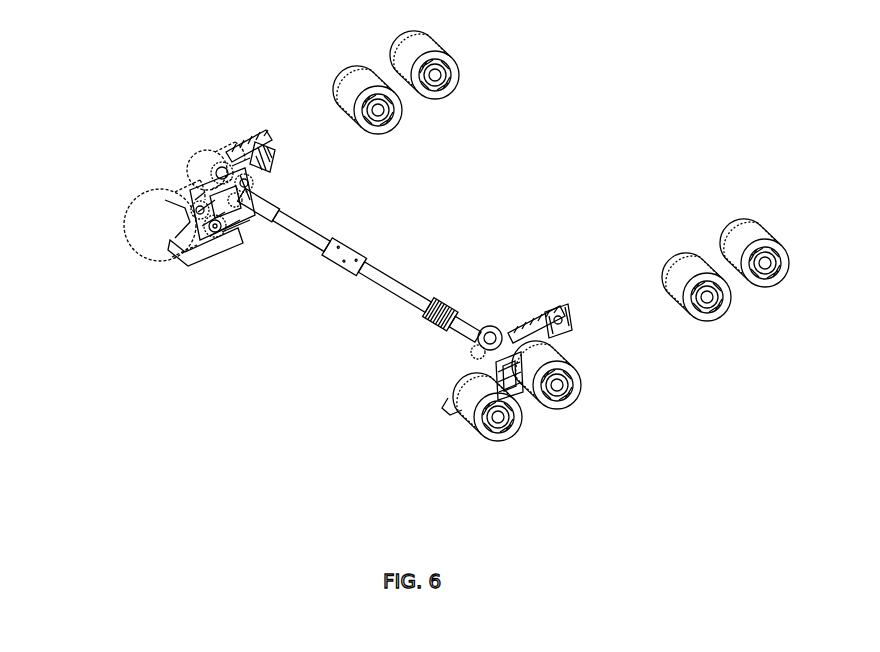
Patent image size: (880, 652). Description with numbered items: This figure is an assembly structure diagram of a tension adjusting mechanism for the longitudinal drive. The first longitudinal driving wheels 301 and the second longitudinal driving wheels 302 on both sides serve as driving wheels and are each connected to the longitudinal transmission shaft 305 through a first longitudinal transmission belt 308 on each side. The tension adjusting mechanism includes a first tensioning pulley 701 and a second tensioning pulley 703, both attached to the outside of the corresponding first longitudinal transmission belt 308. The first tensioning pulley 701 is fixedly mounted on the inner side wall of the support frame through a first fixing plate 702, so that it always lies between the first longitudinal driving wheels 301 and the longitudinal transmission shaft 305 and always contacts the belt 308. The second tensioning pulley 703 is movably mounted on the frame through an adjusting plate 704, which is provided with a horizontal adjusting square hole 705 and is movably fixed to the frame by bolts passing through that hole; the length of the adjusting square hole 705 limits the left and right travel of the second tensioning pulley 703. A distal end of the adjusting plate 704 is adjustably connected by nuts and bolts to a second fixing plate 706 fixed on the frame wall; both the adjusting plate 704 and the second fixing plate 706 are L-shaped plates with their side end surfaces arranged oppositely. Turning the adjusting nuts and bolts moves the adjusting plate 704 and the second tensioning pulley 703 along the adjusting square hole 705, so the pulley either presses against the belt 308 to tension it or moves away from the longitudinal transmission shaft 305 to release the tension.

The first longitudinal driving wheel 301 is at (151, 232).
The second longitudinal driving wheel 302 is at (215, 160).
The longitudinal transmission shaft 305 is at (381, 280).
The first longitudinal transmission belt 308 is at (219, 235).
The first tensioning pulley 701 is at (192, 230).
The first fixing plate 702 is at (165, 200).
The second tensioning pulley 703 is at (253, 176).
The adjusting plate 704 is at (234, 148).
The adjusting square hole 705 is at (248, 150).
The second fixing plate 706 is at (275, 149).